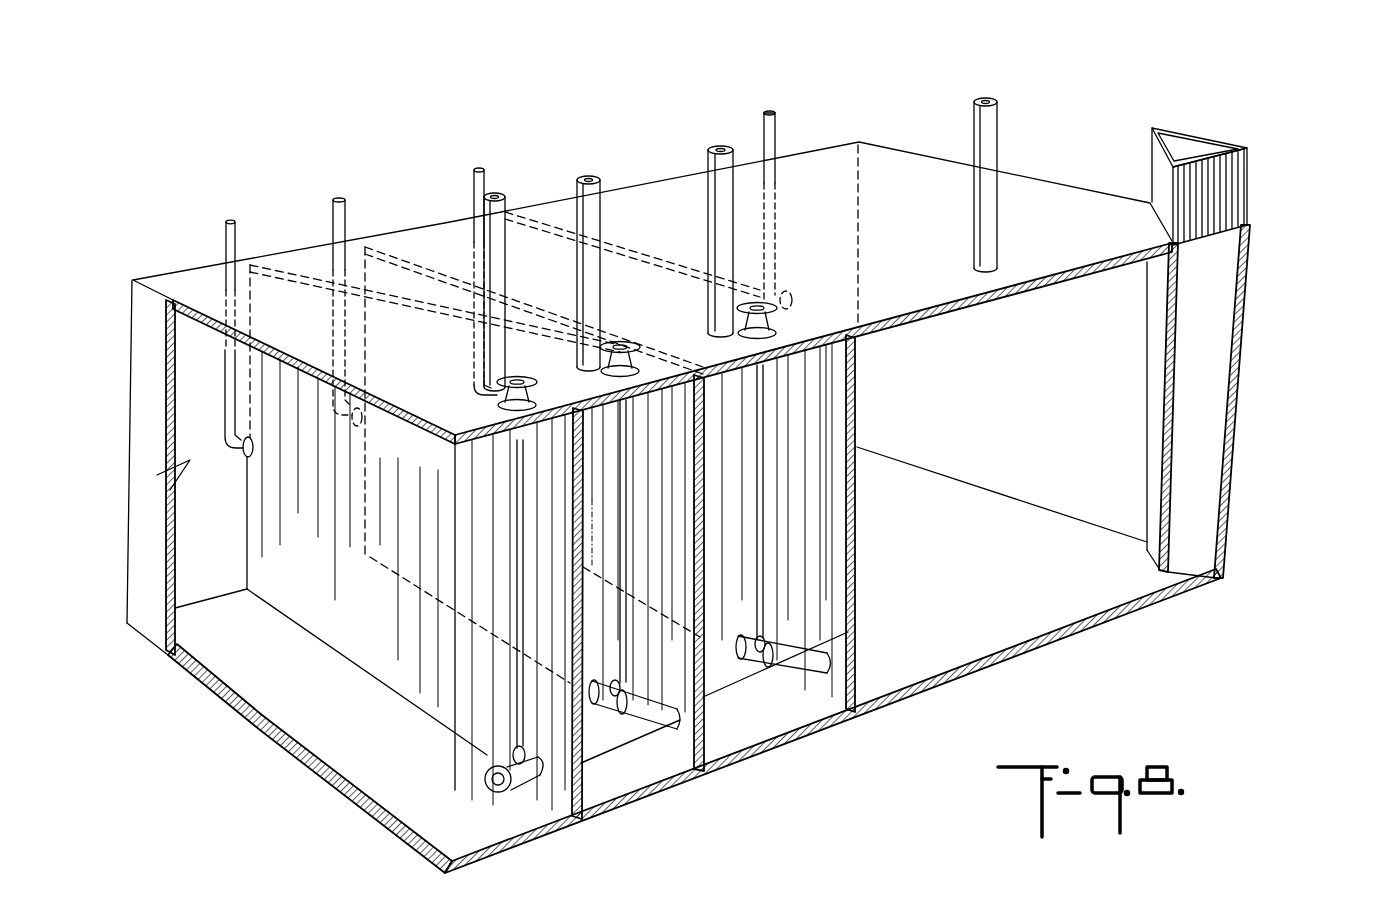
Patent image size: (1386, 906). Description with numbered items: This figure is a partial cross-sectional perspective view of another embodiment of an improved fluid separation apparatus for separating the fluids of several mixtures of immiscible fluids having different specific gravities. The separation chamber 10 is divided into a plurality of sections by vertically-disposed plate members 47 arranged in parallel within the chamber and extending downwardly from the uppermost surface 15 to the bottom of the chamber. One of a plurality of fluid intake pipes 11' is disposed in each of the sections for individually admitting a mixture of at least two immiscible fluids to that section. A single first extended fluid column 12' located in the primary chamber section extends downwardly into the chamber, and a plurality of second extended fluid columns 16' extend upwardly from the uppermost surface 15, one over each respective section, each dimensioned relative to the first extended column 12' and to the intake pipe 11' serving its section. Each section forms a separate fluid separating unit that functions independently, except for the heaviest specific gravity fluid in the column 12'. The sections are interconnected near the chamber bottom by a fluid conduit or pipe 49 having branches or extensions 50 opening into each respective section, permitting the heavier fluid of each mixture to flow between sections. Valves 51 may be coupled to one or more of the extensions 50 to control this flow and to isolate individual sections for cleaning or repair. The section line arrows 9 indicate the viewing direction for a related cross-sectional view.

The section line arrows 9 is at (1318, 171).
The separation chamber 10 is at (1034, 425).
The fluid intake pipes 11' is at (523, 327).
The first extended fluid column 12' is at (1222, 176).
The uppermost surface 15 is at (940, 310).
The second extended fluid columns 16' is at (767, 244).
The plate members 47 is at (583, 492).
The fluid conduit or pipe 49 is at (625, 735).
The branches or extensions 50 is at (522, 790).
The valves 51 is at (483, 757).